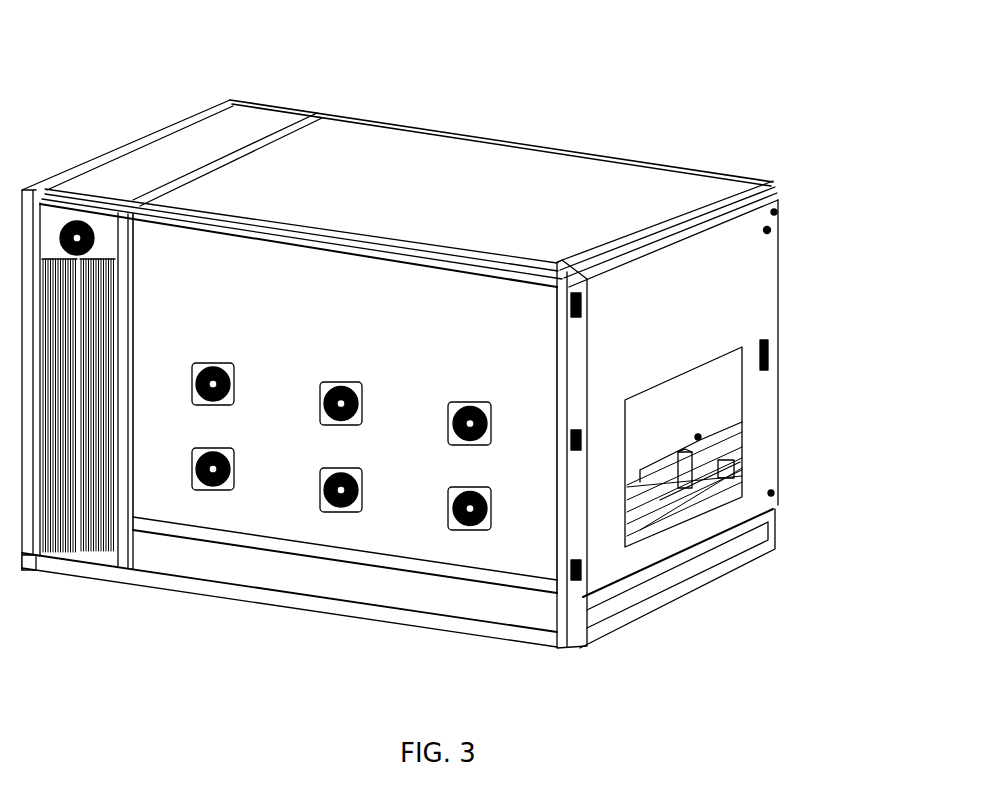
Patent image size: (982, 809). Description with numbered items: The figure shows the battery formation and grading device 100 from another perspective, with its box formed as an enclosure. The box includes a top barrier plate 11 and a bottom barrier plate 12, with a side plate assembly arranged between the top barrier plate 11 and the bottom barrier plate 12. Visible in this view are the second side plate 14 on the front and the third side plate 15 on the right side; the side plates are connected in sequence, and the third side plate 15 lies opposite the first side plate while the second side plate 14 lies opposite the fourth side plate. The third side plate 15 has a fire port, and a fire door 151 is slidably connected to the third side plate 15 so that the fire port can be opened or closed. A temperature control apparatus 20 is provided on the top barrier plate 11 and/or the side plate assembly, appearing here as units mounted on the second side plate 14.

The battery formation and grading device 100 is at (92, 38).
The top barrier plate 11 is at (510, 165).
The bottom barrier plate 12 is at (703, 582).
The second side plate 14 is at (413, 530).
The third side plate 15 is at (745, 302).
The fire door 151 is at (710, 407).
The temperature control apparatus 20 is at (337, 512).